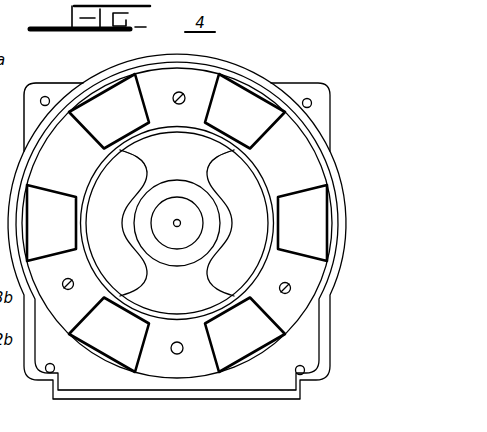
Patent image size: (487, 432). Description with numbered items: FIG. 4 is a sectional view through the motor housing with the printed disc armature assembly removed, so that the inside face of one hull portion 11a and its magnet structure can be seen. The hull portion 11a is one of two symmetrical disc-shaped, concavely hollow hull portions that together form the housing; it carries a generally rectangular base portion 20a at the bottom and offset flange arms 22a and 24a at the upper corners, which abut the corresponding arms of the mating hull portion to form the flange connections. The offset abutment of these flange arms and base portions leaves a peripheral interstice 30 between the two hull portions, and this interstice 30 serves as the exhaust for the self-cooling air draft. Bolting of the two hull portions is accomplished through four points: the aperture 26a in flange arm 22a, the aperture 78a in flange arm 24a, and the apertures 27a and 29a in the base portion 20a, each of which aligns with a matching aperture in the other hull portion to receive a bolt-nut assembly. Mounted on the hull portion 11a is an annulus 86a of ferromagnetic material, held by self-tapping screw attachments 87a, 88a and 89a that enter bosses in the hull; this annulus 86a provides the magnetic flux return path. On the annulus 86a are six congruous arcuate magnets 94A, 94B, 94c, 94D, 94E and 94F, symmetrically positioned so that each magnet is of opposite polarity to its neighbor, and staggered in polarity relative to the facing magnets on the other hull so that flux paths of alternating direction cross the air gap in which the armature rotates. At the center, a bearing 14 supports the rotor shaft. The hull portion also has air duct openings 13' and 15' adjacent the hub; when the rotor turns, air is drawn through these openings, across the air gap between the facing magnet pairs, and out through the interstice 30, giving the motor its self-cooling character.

The hull portion 11a is at (297, 341).
The annulus 86a is at (304, 175).
The flange arm 24a is at (285, 87).
The bearing 14 is at (177, 202).
The air duct opening 15' is at (142, 156).
The air duct opening 13' is at (210, 156).
The magnet 94A is at (97, 126).
The magnet 94B is at (222, 126).
The magnet 94c is at (320, 234).
The magnet 94D is at (222, 342).
The magnet 94E is at (97, 342).
The magnet 94F is at (70, 234).
The screw attachment 87a is at (181, 95).
The screw attachment 89a is at (62, 284).
The screw attachment 88a is at (292, 278).
The aperture 26a is at (47, 96).
The flange arm 22a is at (67, 82).
The mounting hole 78a is at (310, 99).
The aperture 27a is at (47, 372).
The aperture 29a is at (305, 370).
The peripheral interstice 30 is at (162, 396).
The base portion 20a is at (243, 393).